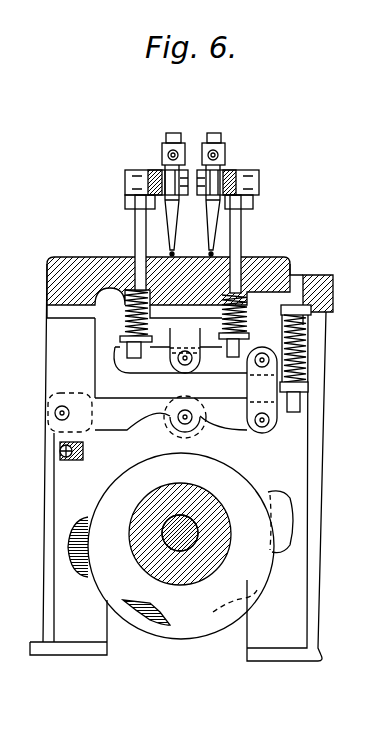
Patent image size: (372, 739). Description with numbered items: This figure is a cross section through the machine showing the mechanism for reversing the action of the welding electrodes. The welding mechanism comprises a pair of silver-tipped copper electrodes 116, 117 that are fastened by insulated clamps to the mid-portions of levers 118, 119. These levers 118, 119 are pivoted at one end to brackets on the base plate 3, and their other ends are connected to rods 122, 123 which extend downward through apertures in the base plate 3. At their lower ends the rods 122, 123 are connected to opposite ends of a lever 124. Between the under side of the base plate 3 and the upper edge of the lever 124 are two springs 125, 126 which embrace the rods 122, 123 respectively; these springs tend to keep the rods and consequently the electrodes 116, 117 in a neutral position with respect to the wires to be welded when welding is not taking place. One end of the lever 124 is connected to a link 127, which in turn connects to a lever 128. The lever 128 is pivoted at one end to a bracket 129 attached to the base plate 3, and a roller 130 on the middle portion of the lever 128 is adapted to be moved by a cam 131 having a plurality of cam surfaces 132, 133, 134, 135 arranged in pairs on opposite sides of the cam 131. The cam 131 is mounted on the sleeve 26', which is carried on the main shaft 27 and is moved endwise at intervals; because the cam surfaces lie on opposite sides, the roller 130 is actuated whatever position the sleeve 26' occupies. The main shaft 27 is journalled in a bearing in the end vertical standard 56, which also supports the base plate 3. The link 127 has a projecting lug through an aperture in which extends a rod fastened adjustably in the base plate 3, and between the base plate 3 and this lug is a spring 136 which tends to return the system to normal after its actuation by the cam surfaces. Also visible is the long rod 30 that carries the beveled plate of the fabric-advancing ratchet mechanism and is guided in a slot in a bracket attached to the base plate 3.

The base plate 3 is at (58, 257).
The sleeve 26' is at (186, 529).
The main shaft 27 is at (190, 540).
The rod 30 is at (77, 458).
The end vertical standard 56 is at (300, 560).
The electrode 116 is at (172, 215).
The electrode 117 is at (207, 226).
The lever 118 is at (158, 168).
The lever 119 is at (233, 168).
The rod 122 is at (136, 240).
The rod 123 is at (237, 249).
The lever 124 is at (128, 360).
The spring 125 is at (124, 324).
The spring 126 is at (248, 326).
The link 127 is at (254, 381).
The lever 128 is at (147, 412).
The bracket 129 is at (56, 350).
The roller 130 is at (196, 388).
The cam 131 is at (181, 546).
The cam surface 132 is at (283, 494).
The cam surface 133 is at (148, 622).
The cam surface 134 is at (82, 521).
The cam surface 135 is at (229, 613).
The spring 136 is at (310, 347).